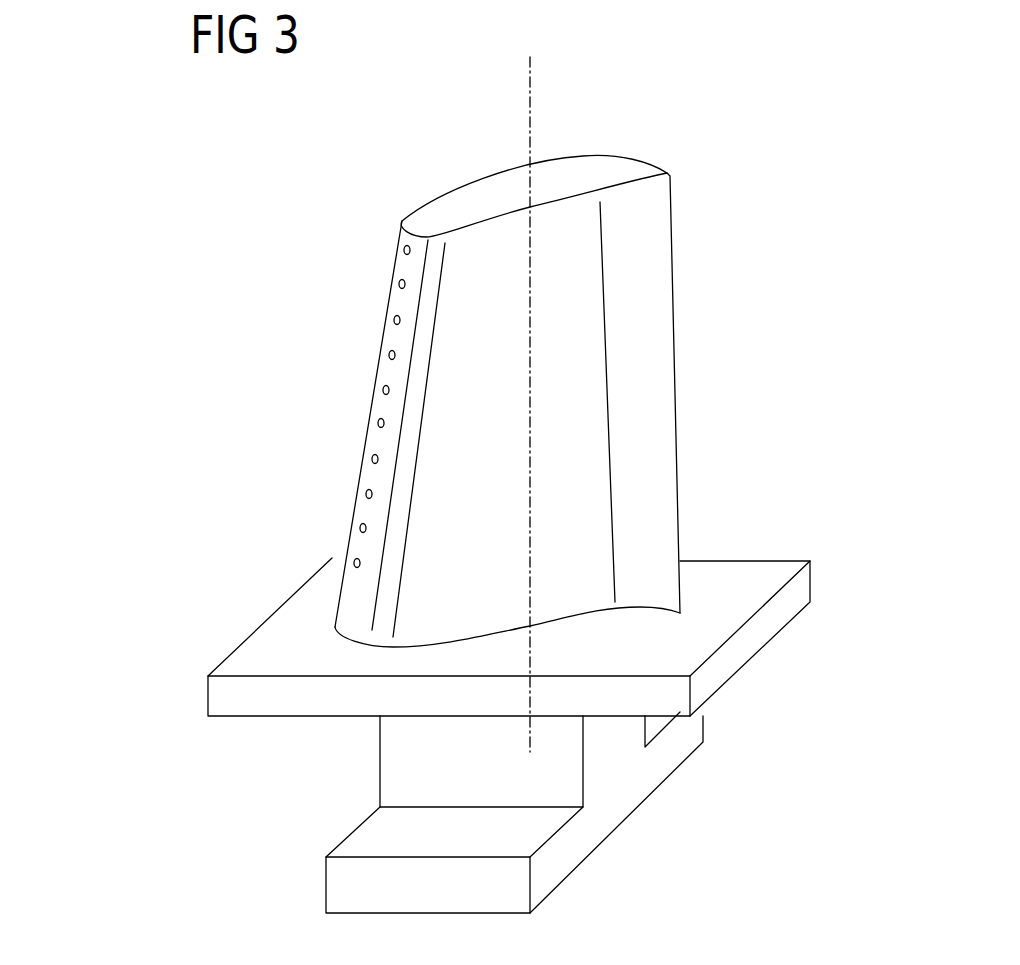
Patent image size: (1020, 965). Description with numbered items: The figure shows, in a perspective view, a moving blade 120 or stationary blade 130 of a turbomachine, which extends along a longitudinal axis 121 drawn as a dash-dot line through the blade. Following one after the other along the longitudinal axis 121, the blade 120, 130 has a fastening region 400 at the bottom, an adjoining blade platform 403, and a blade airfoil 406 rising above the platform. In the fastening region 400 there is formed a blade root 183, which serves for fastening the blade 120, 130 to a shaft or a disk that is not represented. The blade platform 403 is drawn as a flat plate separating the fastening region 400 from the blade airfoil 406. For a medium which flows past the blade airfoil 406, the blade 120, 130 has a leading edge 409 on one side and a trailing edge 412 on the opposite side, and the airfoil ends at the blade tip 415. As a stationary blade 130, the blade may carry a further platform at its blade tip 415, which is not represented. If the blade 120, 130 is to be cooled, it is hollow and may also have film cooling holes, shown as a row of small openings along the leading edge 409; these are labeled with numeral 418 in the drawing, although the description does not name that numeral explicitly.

The moving blade 120 is at (437, 356).
The stationary blade 130 is at (245, 413).
The longitudinal axis 121 is at (530, 100).
The blade root 183 is at (367, 838).
The fastening region 400 is at (503, 812).
The blade platform 403 is at (773, 610).
The blade airfoil 406 is at (355, 605).
The leading edge 409 is at (374, 316).
The trailing edge 412 is at (690, 355).
The blade tip 415 is at (432, 212).
The film cooling holes 418 is at (393, 319).